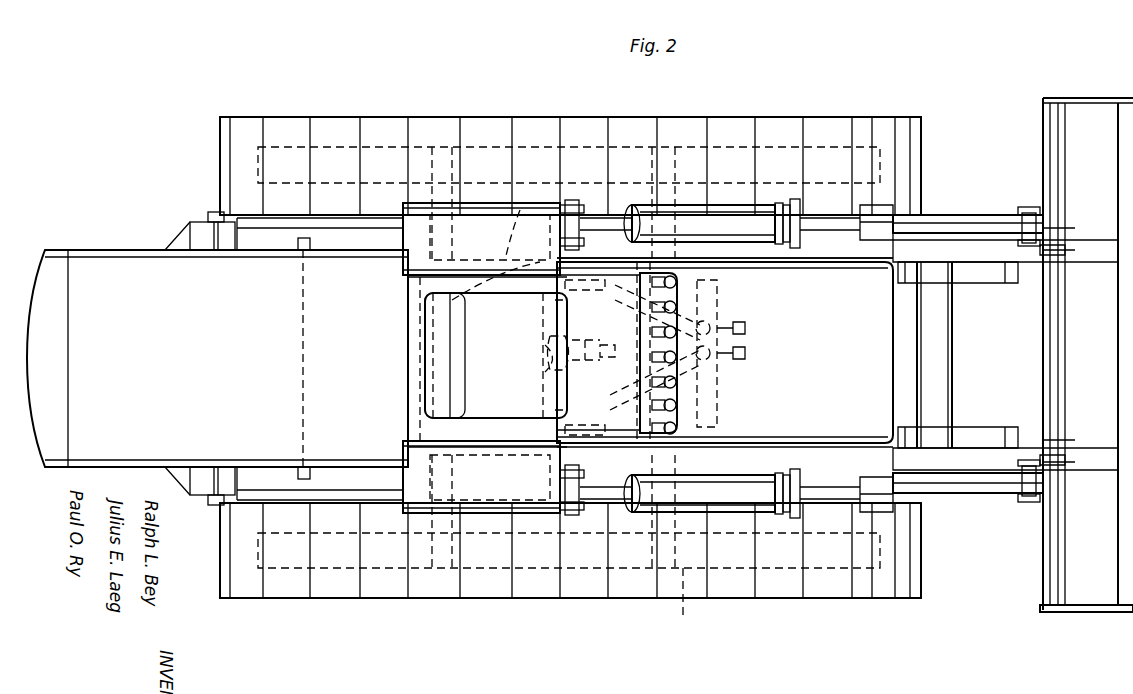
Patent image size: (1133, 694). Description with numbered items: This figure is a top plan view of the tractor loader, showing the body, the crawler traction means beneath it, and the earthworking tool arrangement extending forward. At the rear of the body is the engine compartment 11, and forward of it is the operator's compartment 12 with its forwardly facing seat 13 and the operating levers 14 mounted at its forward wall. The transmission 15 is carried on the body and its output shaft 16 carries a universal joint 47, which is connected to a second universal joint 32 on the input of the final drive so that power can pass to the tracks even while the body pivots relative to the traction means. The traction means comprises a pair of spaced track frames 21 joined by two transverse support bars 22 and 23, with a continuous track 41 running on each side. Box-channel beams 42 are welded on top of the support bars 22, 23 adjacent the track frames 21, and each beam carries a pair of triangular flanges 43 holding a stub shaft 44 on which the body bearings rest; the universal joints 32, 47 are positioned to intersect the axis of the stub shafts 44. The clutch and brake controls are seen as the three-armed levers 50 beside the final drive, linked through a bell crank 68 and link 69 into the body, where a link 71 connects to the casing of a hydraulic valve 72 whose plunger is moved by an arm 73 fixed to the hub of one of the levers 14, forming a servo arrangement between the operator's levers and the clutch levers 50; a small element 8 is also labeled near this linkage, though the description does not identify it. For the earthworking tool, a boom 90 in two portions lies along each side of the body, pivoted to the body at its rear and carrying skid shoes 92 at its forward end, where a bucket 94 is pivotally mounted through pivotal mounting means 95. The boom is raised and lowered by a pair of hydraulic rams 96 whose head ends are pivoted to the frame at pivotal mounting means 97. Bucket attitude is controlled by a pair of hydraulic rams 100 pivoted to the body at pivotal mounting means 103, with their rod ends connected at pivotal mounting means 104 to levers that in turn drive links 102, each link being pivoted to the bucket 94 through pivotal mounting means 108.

The coupling 8 is at (585, 301).
The engine compartment 11 is at (107, 250).
The operator's compartment 12 is at (495, 405).
The seat 13 is at (468, 365).
The levers 14 is at (700, 355).
The transmission 15 is at (722, 398).
The output shaft 16 is at (576, 345).
The track frames 21 is at (478, 147).
The transverse support bar 22 is at (455, 548).
The transverse support bar 23 is at (681, 602).
The universal joint 32 is at (545, 372).
The continuous tracks 41 is at (383, 117).
The beams 42 is at (481, 358).
The flanges 43 is at (523, 210).
The stub shafts 44 is at (560, 250).
The universal joint 47 is at (600, 366).
The levers 50 is at (555, 300).
The bell crank 68 is at (600, 425).
The link 69 is at (613, 355).
The link 71 is at (745, 345).
The hydraulic valve 72 is at (718, 320).
The arm 73 is at (655, 380).
The boom 90 is at (838, 245).
The skid shoes 92 is at (1000, 283).
The bucket 94 is at (1047, 125).
The pivotal mounting means 95 is at (1052, 226).
The hydraulic rams 96 is at (278, 232).
The pivotal mounting means 97 is at (212, 212).
The hydraulic rams 100 is at (725, 205).
The links 102 is at (953, 215).
The pivotal mounting means 103 is at (571, 200).
The pivotal mounting means 104 is at (893, 215).
The pivotal mounting means 108 is at (1027, 207).